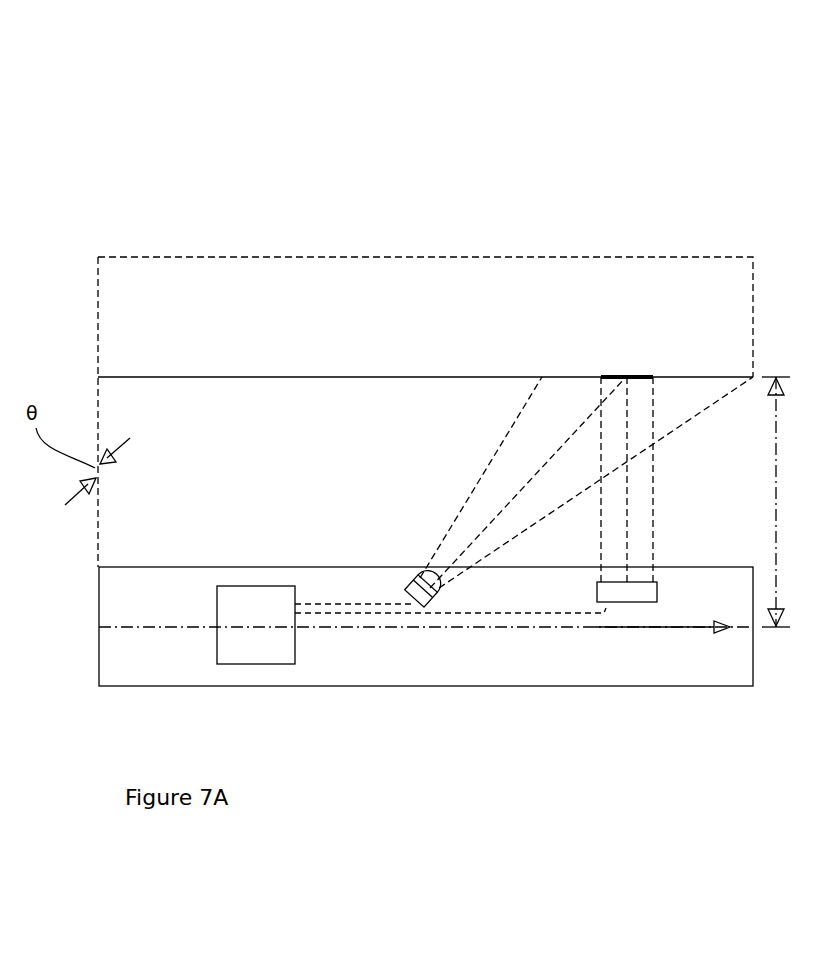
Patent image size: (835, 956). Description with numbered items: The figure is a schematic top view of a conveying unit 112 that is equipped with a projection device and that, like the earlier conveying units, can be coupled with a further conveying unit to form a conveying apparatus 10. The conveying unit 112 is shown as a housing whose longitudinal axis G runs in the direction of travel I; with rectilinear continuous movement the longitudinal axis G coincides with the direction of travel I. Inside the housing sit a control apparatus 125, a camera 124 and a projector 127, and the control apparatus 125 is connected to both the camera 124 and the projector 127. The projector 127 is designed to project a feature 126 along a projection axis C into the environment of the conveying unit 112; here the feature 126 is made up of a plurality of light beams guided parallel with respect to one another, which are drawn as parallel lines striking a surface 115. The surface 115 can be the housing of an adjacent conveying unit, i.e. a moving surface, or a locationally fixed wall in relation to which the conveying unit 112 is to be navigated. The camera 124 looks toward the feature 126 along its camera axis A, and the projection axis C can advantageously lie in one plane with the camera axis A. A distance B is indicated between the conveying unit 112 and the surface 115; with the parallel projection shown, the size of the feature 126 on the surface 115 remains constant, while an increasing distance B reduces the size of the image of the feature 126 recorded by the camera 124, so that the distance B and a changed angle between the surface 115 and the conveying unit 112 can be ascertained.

The conveying apparatus 10 is at (166, 159).
The surface 115 is at (228, 378).
The conveying unit 112 is at (200, 567).
The control apparatus 125 is at (264, 586).
The camera 124 is at (414, 575).
The feature 126 is at (638, 378).
The projector 127 is at (657, 584).
The camera axis A is at (490, 518).
The distance B is at (777, 425).
The projection axis C is at (627, 518).
The longitudinal axis G is at (139, 626).
The direction of travel I is at (388, 625).